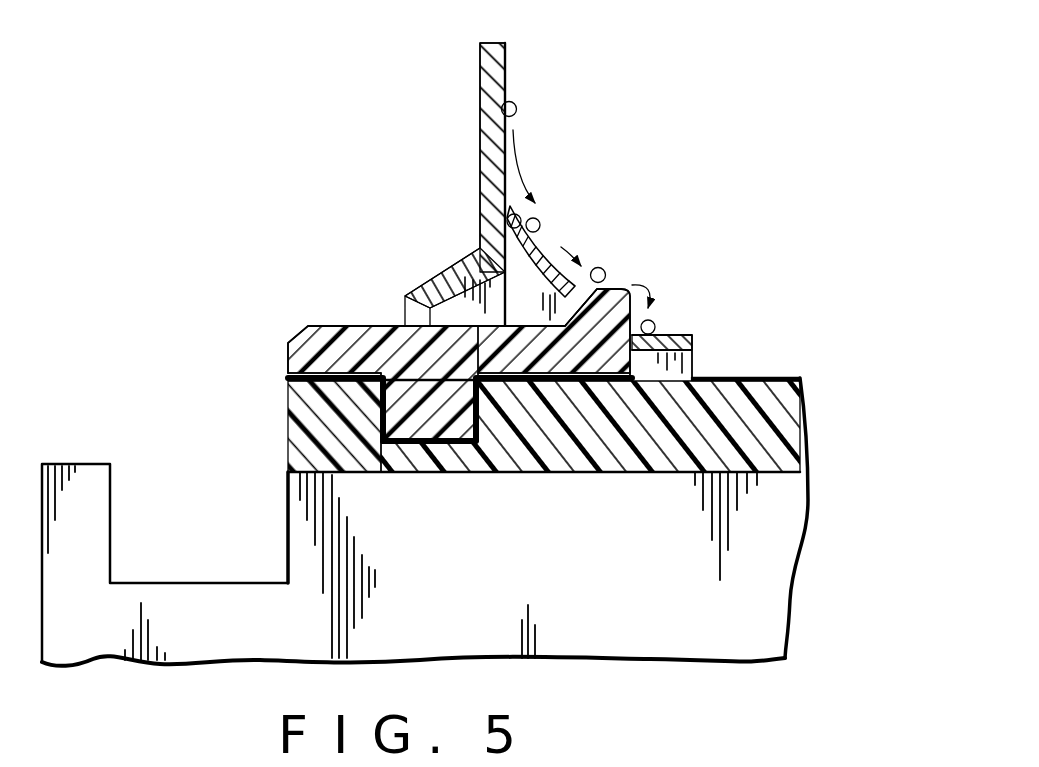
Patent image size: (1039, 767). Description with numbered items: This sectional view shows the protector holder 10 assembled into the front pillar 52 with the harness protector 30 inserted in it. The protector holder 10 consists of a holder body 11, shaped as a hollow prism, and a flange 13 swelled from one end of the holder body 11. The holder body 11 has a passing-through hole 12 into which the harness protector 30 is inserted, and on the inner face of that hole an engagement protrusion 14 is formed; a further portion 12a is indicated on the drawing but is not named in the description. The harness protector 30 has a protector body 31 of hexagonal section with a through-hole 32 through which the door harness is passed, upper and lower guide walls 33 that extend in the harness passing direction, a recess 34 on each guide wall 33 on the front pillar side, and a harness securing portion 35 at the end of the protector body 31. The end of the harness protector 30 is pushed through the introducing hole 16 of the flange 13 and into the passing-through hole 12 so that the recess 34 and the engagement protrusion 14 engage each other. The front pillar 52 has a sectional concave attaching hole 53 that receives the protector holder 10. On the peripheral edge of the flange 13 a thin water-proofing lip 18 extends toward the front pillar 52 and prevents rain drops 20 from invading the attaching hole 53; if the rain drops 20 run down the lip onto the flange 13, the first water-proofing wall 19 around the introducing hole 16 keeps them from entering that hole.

The protector holder 10 is at (574, 390).
The holder body 11 is at (365, 323).
The passing-through hole 12 is at (310, 389).
The protrusion 12a is at (548, 420).
The flange 13 is at (622, 280).
The engagement protrusion 14 is at (447, 422).
The introducing hole 16 is at (612, 397).
The water-proofing lip 18 is at (535, 250).
The first water-proofing wall 19 is at (672, 333).
The rain drops 20 is at (518, 105).
The harness protector 30 is at (481, 486).
The protector body 31 is at (813, 502).
The through-hole 32 is at (770, 552).
The guide wall 33 is at (778, 430).
The recess 34 is at (458, 424).
The harness securing portion 35 is at (78, 480).
The front pillar 52 is at (510, 59).
The attaching hole 53 is at (403, 323).